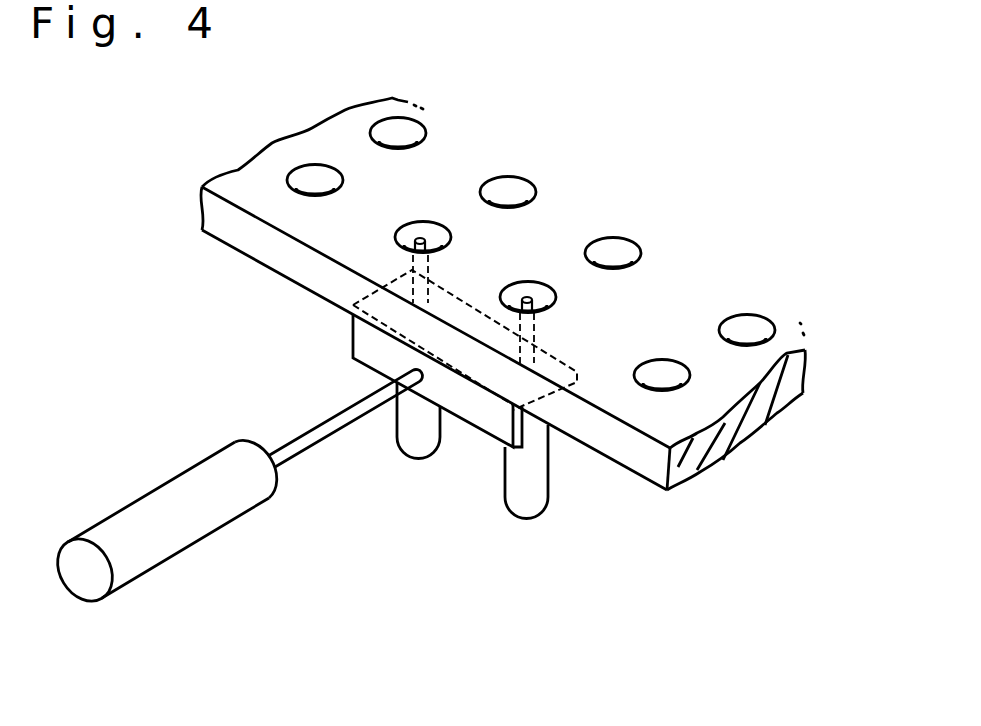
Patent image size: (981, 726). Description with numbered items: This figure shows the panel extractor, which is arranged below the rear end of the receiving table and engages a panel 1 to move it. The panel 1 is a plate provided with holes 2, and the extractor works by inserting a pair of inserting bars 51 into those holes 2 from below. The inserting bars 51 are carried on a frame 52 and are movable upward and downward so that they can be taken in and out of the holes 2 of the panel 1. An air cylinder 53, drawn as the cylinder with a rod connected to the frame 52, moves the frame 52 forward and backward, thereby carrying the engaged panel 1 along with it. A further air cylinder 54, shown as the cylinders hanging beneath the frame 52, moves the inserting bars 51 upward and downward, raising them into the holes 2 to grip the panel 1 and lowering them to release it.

The panel 1 is at (727, 442).
The holes 2 is at (557, 299).
The inserting bars 51 is at (423, 238).
The frame 52 is at (353, 346).
The air cylinder 53 is at (213, 517).
The air cylinder 54 is at (400, 442).